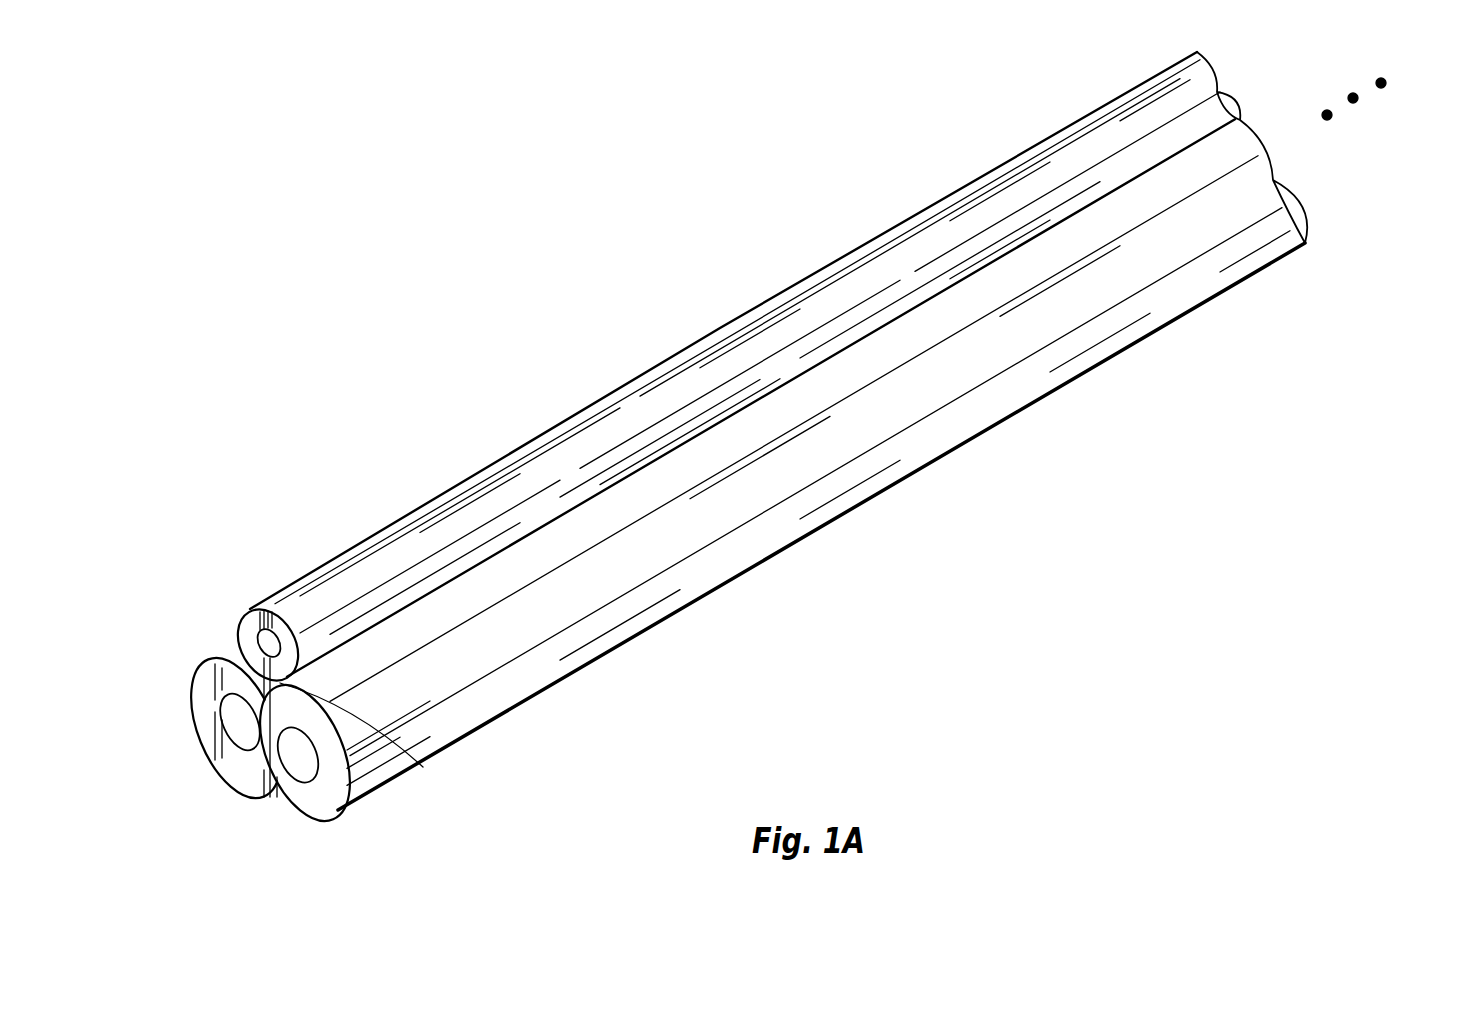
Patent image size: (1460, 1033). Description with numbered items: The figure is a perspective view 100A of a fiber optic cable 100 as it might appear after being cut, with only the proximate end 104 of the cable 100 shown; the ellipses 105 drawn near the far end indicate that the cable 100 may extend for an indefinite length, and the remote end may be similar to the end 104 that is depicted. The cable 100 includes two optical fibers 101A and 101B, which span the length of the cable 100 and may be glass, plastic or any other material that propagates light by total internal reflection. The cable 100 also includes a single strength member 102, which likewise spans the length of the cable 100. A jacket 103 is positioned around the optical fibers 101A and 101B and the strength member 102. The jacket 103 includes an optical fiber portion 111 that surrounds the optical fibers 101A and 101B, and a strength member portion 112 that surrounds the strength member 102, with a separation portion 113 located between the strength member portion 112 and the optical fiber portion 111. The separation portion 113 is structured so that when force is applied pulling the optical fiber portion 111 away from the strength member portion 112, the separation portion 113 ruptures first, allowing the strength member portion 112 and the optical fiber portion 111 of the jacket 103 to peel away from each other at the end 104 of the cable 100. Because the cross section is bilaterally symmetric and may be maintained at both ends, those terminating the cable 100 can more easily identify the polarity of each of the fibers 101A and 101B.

The perspective view 100A is at (707, 464).
The fiber optic cable 100 is at (707, 464).
The optical fiber 101A is at (243, 725).
The optical fiber 101B is at (300, 768).
The strength member 102 is at (247, 607).
The jacket 103 is at (607, 417).
The end of the cable 104 is at (213, 607).
The ellipses 105 is at (1356, 102).
The optical fiber portion 111 is at (330, 802).
The strength member portion 112 is at (278, 622).
The separation portion 113 is at (423, 767).